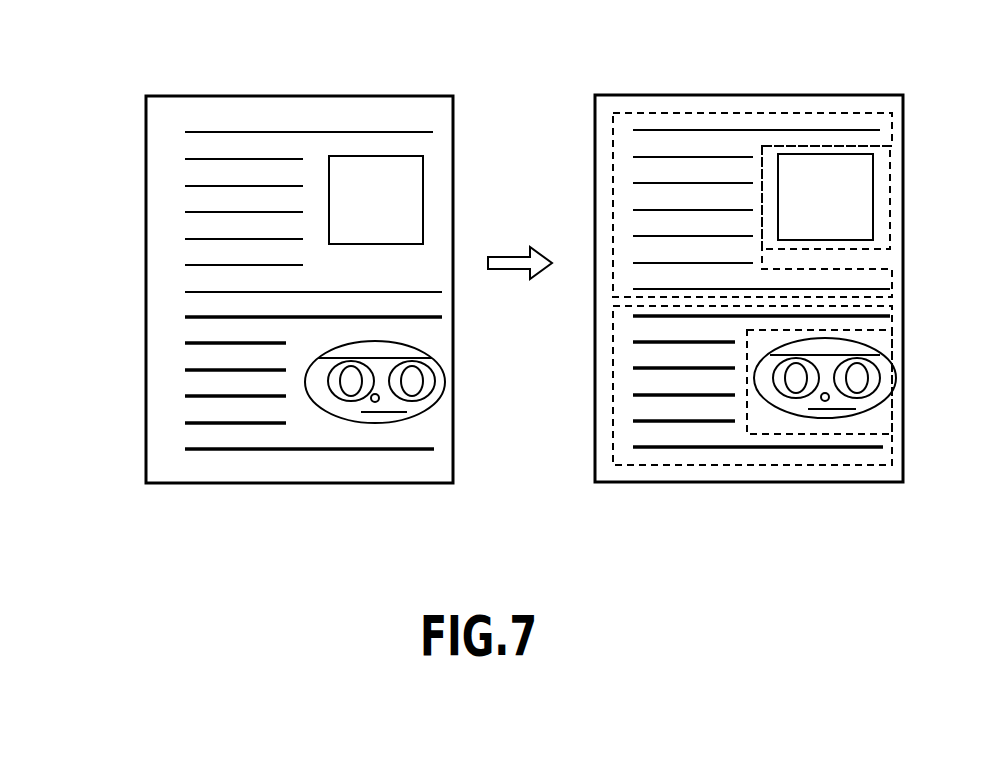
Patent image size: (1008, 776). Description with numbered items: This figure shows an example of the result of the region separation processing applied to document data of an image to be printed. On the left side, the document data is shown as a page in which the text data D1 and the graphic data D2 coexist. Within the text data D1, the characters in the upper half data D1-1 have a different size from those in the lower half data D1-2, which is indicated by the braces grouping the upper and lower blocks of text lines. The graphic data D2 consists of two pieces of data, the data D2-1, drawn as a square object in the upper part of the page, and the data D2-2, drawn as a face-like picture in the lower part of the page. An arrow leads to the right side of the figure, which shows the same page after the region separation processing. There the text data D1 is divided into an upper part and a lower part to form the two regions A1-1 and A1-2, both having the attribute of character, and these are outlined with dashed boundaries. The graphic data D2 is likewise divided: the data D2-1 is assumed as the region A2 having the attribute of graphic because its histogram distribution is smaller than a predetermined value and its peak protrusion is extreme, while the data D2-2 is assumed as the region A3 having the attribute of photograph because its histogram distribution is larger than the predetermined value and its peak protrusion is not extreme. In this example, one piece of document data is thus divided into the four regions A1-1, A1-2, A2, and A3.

The text data D1 is at (300, 289).
The upper half data D1-1 is at (145, 130).
The lower half data D1-2 is at (145, 313).
The graphic data D2 is at (442, 289).
The first piece of graphic data D2-1 is at (421, 231).
The second piece of graphic data D2-2 is at (409, 352).
The first character region A1-1 is at (673, 130).
The graphic region A2 is at (831, 163).
The second character region A1-2 is at (678, 448).
The photograph region A3 is at (838, 402).